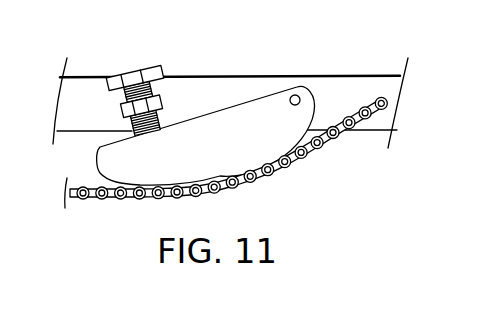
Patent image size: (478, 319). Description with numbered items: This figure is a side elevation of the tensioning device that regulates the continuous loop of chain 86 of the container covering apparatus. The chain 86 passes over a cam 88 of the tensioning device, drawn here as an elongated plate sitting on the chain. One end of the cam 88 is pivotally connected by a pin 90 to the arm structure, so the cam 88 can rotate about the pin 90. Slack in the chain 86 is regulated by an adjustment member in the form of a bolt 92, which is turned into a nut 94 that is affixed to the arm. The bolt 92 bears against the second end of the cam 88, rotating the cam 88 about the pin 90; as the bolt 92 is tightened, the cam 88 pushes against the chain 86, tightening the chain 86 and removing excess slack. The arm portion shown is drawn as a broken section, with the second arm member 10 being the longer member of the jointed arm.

The second arm member 10 is at (394, 86).
The chain 86 is at (334, 141).
The cam 88 is at (230, 156).
The pin 90 is at (297, 95).
The bolt 92 is at (162, 64).
The nut 94 is at (126, 113).